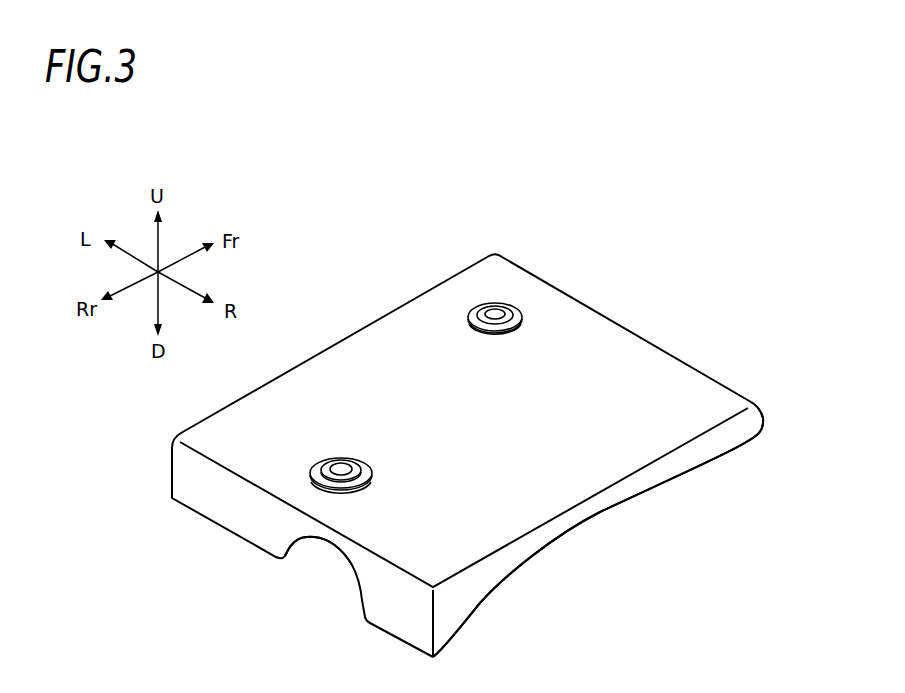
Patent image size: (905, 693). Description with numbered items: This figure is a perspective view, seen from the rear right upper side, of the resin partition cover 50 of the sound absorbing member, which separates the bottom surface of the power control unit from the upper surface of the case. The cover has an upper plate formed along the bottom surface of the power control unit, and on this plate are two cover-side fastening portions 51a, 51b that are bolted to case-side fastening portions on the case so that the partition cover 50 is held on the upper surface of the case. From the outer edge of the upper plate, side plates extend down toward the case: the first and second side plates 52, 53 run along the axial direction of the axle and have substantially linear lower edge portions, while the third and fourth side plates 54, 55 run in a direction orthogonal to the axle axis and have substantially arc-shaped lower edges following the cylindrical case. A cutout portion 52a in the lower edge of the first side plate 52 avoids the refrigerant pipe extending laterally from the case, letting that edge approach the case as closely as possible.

The partition cover 50 is at (566, 342).
The cover-side fastening portion 51a is at (333, 458).
The cover-side fastening portion 51b is at (496, 305).
The first side plate 52 is at (241, 522).
The cutout portion 52a is at (302, 549).
The second side plate 53 is at (765, 410).
The third side plate 54 is at (487, 580).
The fourth side plate 55 is at (168, 466).